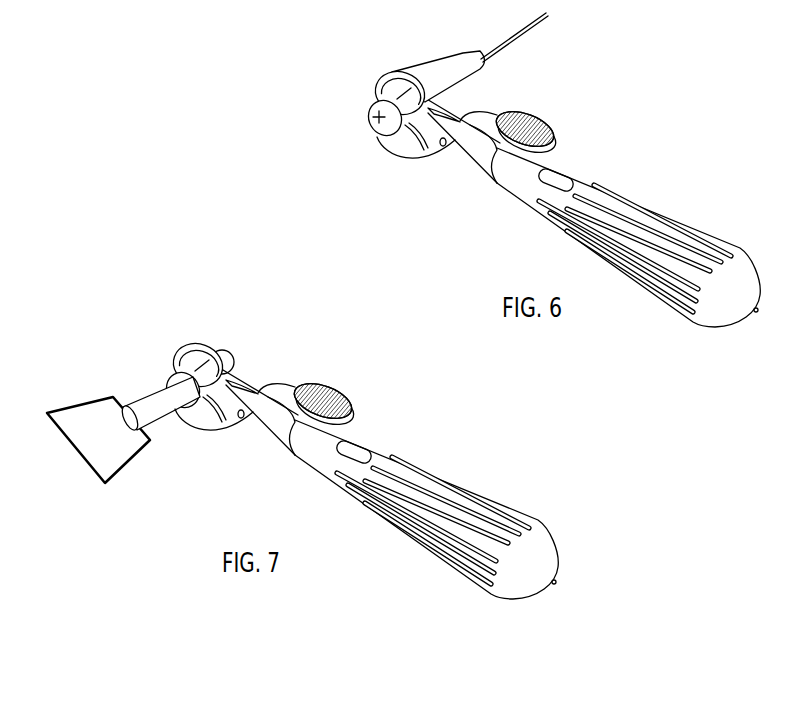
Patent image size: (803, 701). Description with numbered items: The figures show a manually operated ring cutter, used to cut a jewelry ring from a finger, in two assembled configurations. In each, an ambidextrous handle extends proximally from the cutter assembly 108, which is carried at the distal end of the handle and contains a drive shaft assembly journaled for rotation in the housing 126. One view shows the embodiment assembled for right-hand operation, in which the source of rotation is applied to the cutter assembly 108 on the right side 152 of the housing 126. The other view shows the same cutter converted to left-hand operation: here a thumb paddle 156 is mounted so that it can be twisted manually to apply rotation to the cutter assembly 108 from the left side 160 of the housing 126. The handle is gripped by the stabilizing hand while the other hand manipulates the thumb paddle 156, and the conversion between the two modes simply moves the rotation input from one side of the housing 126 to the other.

In FIG. 7, the cutter assembly 108 is at (188, 322).
In FIG. 6, the housing 126 is at (426, 128).
In FIG. 7, the housing 126 is at (223, 402).
In FIG. 6, the right side 152 is at (521, 92).
In FIG. 7, the thumb paddle 156 is at (100, 433).
In FIG. 7, the left side 160 is at (203, 461).